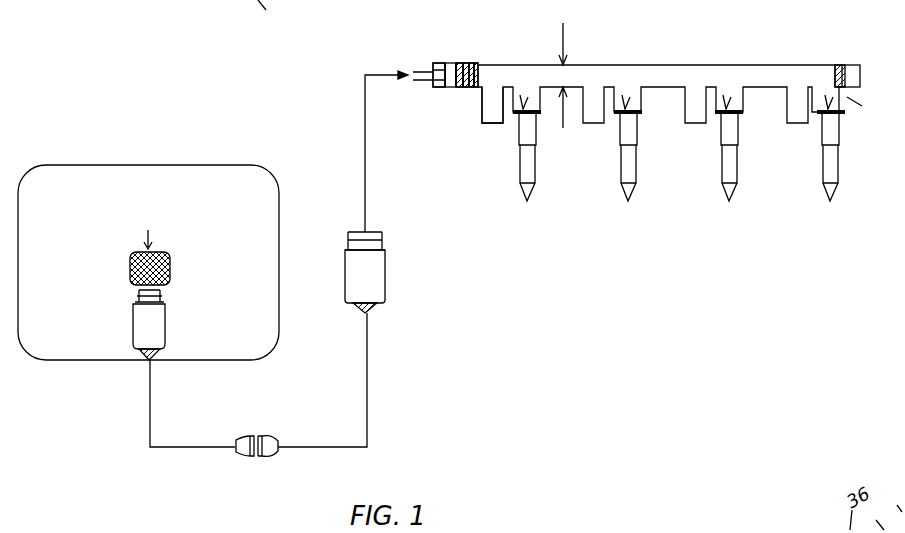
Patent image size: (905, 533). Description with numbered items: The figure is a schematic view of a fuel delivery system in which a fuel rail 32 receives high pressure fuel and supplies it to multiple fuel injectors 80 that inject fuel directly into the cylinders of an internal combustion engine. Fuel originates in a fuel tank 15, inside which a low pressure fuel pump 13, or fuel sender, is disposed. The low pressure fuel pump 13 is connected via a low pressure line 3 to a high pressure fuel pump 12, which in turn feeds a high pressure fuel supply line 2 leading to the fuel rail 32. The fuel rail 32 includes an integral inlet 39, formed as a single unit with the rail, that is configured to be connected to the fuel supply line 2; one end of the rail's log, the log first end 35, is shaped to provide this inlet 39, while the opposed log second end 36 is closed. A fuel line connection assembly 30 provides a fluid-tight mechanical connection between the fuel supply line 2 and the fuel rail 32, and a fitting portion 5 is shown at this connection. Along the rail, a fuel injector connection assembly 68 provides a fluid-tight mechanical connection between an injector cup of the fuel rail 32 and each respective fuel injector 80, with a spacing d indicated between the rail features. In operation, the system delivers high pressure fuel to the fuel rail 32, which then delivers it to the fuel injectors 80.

The high pressure fuel supply line 2 is at (362, 132).
The low pressure line 3 is at (369, 368).
The fitting portion 5 is at (447, 62).
The high pressure fuel pump 12 is at (388, 285).
The low pressure fuel pump 13 is at (160, 326).
The fuel tank 15 is at (122, 166).
The fuel line connection assembly 30 is at (435, 106).
The fuel rail 32 is at (668, 67).
The log first end 35 is at (482, 118).
The log second end 36 is at (850, 60).
The integral inlet 39 is at (472, 62).
The fuel injector connection assembly 68 is at (527, 75).
The fuel injector 80 is at (519, 171).
The distance d is at (565, 27).